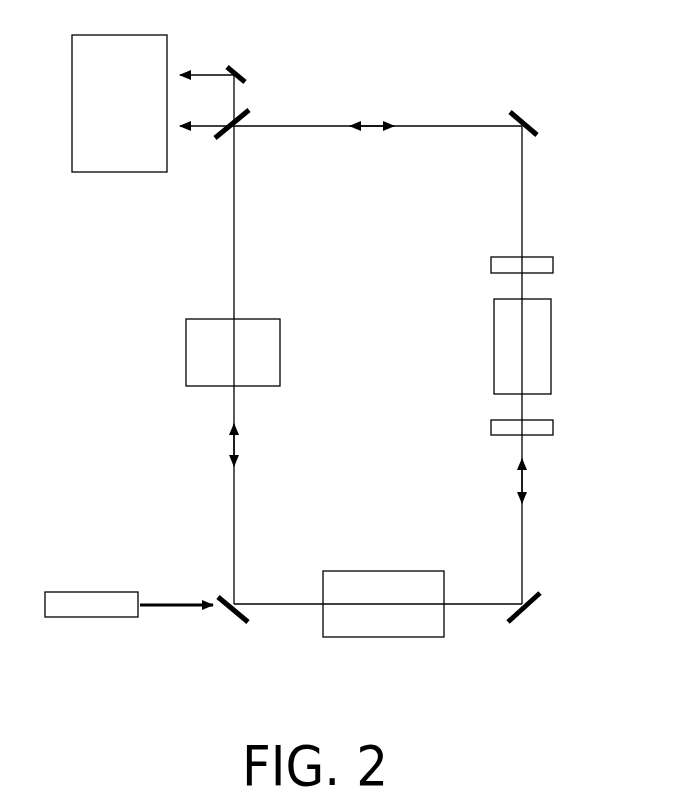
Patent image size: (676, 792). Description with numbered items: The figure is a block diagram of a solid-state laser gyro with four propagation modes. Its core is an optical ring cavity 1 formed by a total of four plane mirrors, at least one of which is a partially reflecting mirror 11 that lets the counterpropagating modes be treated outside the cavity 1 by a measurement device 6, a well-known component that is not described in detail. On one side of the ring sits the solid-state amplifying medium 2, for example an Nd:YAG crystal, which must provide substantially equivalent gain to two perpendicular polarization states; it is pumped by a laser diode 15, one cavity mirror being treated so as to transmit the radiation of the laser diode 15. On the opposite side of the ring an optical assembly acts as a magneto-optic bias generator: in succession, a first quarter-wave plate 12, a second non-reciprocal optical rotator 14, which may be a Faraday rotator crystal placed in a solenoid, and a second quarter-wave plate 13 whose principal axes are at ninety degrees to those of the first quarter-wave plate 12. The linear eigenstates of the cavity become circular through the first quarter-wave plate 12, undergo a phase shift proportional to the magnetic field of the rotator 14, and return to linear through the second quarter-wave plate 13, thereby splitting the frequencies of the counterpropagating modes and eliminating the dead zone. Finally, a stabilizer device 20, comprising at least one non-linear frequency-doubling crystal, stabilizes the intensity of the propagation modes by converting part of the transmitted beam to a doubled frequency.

The optical ring cavity 1 is at (372, 82).
The solid-state amplifying medium 2 is at (377, 578).
The measurement device 6 is at (77, 138).
The partially reflecting mirror 11 is at (253, 98).
The first quarter-wave plate 12 is at (512, 425).
The second quarter-wave plate 13 is at (512, 265).
The second non-reciprocal optical rotator 14 is at (510, 348).
The laser diode 15 is at (88, 598).
The stabilizer device 20 is at (270, 350).